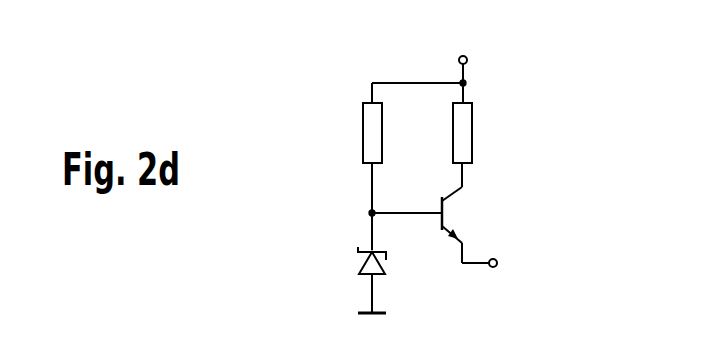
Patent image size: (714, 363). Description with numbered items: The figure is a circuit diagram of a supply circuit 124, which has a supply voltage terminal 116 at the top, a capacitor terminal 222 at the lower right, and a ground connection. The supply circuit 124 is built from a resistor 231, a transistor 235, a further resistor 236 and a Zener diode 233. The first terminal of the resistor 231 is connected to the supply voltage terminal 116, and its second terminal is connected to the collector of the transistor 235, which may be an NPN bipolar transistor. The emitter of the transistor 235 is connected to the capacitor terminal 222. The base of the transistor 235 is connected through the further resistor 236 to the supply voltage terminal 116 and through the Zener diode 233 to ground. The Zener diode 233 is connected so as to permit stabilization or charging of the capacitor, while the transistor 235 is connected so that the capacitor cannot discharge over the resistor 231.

The supply voltage terminal 116 is at (459, 56).
The supply circuit 124 is at (522, 66).
The further resistor 236 is at (372, 131).
The resistor 231 is at (462, 130).
The transistor 235 is at (445, 197).
The capacitor terminal 222 is at (498, 263).
The Zener diode 233 is at (358, 272).